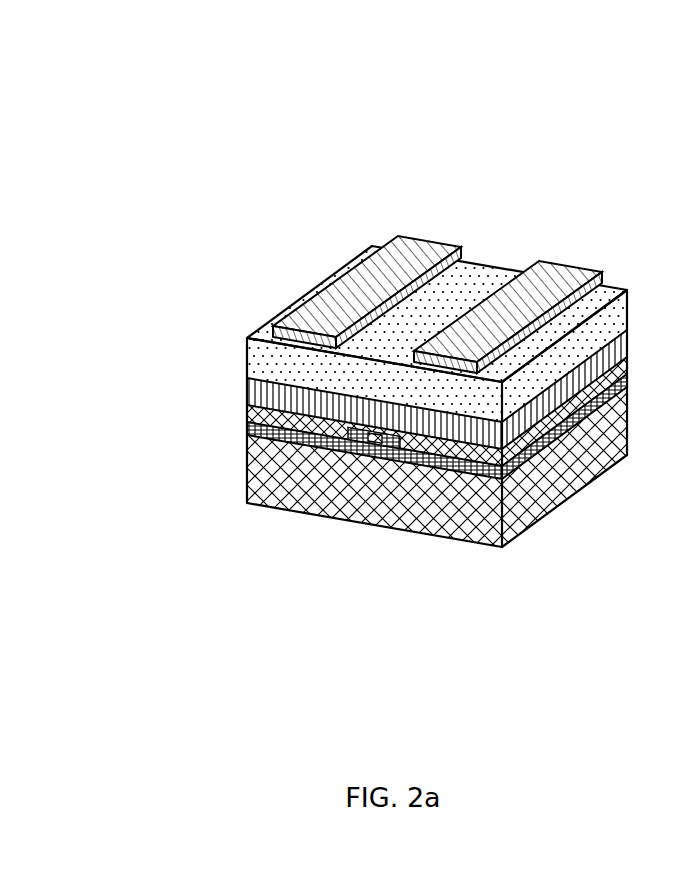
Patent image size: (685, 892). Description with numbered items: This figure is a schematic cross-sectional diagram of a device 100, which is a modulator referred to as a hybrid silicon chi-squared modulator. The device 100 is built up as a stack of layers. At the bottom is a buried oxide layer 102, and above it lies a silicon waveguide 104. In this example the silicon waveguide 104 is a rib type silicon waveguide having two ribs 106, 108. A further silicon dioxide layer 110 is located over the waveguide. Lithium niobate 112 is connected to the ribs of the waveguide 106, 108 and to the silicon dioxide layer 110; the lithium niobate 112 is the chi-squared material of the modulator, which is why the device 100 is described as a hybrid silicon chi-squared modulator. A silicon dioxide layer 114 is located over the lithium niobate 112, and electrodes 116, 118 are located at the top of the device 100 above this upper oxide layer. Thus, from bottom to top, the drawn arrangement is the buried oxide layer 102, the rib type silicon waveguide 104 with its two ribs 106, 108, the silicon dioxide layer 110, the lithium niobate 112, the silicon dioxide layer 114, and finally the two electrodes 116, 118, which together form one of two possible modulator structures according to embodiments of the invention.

The device 100 is at (236, 135).
The buried oxide layer 102 is at (387, 467).
The silicon waveguide 104 is at (383, 426).
The rib 106 is at (330, 497).
The rib 108 is at (402, 515).
The silicon dioxide layer 110 is at (366, 411).
The lithium niobate 112 is at (392, 388).
The silicon dioxide layer 114 is at (398, 326).
The electrode 116 is at (394, 264).
The electrode 118 is at (537, 290).